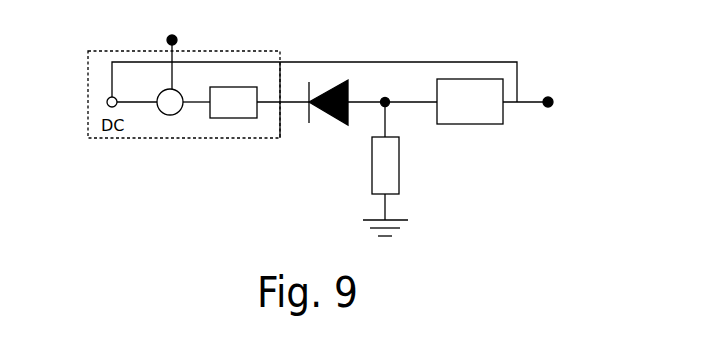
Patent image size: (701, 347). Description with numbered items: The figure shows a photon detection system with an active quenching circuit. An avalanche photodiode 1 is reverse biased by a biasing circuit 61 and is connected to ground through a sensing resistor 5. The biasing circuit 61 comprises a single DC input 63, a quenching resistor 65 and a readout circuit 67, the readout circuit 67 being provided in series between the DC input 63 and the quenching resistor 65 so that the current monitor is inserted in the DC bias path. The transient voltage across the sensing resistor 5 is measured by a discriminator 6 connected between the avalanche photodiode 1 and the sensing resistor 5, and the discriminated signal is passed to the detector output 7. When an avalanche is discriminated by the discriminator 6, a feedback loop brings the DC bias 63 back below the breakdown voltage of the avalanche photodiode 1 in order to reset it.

The avalanche photodiode 1 is at (332, 118).
The sensing resistor 5 is at (406, 172).
The discriminator 6 is at (470, 76).
The detector output 7 is at (551, 92).
The biasing circuit 61 is at (213, 44).
The DC input 63 is at (107, 99).
The quenching resistor 65 is at (231, 118).
The readout circuit 67 is at (163, 92).